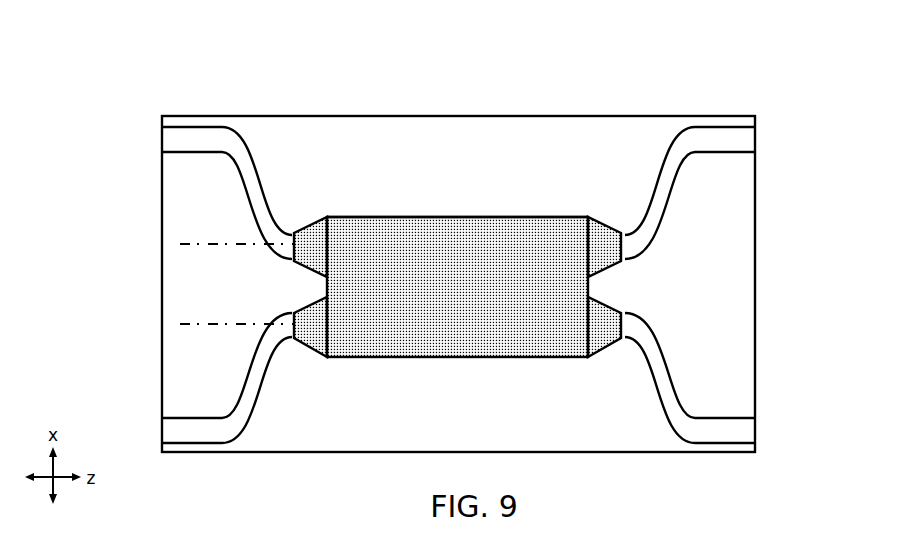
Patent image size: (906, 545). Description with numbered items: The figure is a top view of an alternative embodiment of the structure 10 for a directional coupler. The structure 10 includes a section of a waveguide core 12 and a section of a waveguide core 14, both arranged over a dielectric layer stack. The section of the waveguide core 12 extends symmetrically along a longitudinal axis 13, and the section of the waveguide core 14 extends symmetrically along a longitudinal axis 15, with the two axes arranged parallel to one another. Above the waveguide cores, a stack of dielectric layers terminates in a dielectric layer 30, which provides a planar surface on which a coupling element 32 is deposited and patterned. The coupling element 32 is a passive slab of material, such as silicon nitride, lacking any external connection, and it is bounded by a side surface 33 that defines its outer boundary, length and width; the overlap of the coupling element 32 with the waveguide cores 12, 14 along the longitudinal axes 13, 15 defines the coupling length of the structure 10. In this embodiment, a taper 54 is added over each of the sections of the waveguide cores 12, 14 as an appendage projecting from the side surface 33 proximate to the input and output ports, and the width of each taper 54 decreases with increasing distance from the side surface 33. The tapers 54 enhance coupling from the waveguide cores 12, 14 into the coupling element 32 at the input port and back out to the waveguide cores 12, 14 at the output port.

The structure 10 is at (132, 74).
The waveguide core 12 is at (735, 140).
The longitudinal axis 13 is at (181, 243).
The waveguide core 14 is at (720, 429).
The longitudinal axis 15 is at (181, 322).
The dielectric layer 30 is at (173, 173).
The coupling element 32 is at (370, 257).
The side surface 33 is at (412, 216).
The taper 54 is at (323, 328).